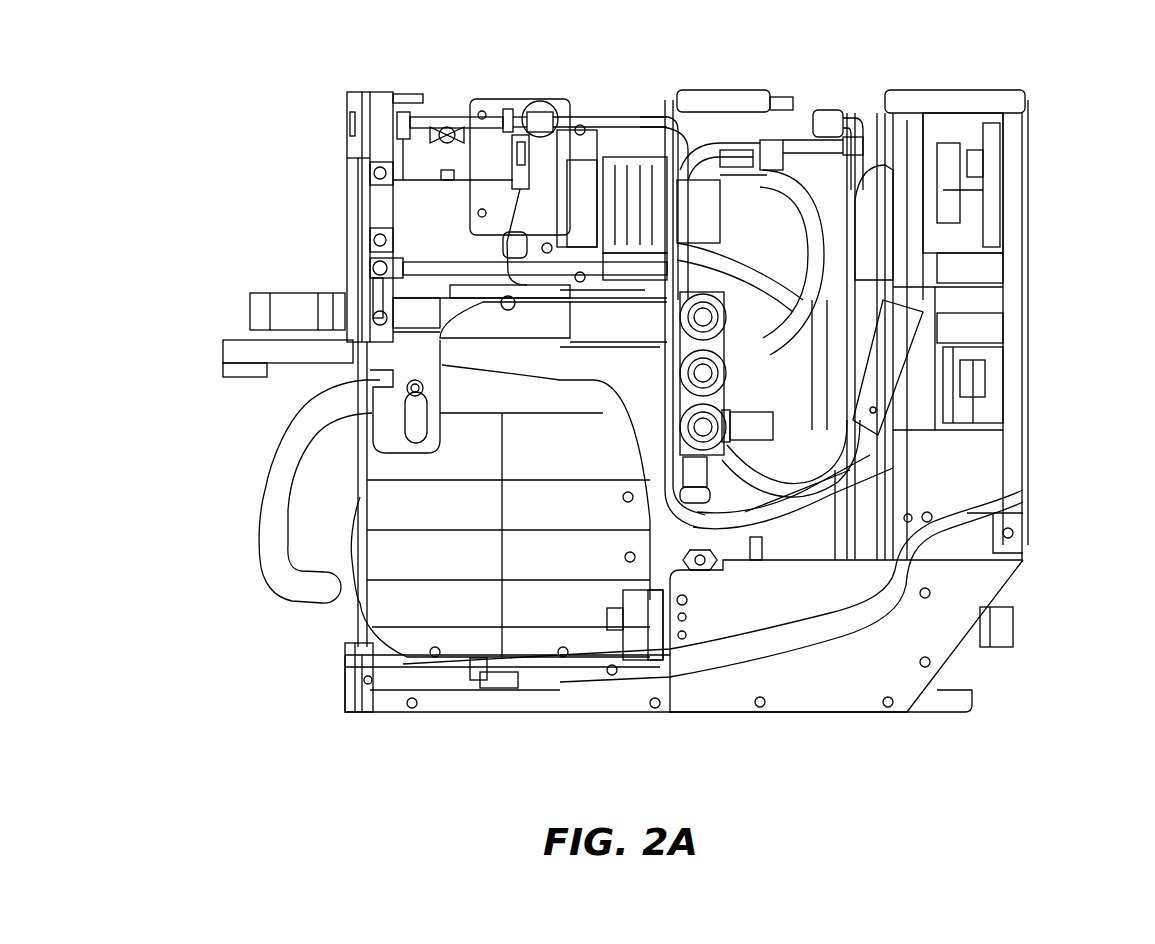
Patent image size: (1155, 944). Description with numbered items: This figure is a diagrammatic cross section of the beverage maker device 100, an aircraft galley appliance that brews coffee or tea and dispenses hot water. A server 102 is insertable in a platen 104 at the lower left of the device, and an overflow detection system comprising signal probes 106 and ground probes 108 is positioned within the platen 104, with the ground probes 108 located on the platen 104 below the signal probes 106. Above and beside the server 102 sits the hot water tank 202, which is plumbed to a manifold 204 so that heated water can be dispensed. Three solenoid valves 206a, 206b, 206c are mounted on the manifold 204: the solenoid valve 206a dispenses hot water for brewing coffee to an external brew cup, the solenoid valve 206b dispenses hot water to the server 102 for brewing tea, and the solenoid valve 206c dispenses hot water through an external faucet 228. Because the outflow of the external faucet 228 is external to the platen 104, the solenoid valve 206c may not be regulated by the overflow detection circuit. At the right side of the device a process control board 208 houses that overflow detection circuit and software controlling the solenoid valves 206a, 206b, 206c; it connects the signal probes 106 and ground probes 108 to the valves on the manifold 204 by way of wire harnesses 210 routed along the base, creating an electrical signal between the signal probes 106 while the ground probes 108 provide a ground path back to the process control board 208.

The beverage maker device 100 is at (140, 121).
The server 102 is at (403, 555).
The platen 104 is at (450, 680).
The signal probes 106 is at (377, 662).
The ground probes 108 is at (500, 683).
The hot water tank 202 is at (758, 227).
The manifold 204 is at (727, 338).
The solenoid valve 206a is at (723, 310).
The solenoid valve 206b is at (730, 425).
The solenoid valve 206c is at (727, 371).
The process control board 208 is at (1018, 294).
The wire harnesses 210 is at (790, 630).
The external faucet 228 is at (253, 353).